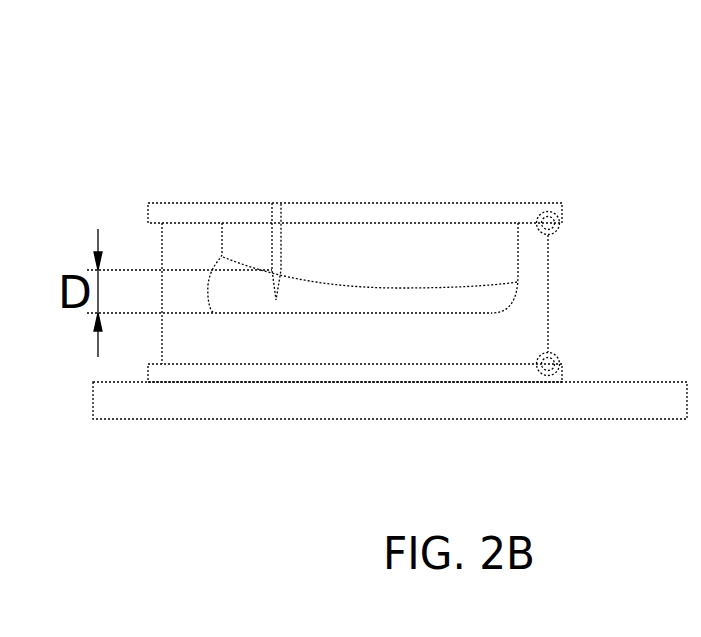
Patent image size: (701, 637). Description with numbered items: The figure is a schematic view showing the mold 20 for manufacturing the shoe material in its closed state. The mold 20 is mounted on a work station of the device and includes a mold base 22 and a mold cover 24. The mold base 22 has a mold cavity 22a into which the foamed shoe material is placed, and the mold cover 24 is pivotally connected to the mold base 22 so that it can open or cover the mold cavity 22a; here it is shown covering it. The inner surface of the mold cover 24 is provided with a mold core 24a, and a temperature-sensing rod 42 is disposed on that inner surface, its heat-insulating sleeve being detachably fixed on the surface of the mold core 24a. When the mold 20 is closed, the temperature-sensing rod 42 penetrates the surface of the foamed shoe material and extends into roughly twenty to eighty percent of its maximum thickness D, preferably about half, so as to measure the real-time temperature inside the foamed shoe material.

The mold 20 is at (478, 147).
The mold cover 24 is at (377, 203).
The temperature-sensing rod 42 is at (272, 243).
The mold core 24a is at (519, 256).
The mold base 22 is at (548, 327).
The mold cavity 22a is at (367, 312).